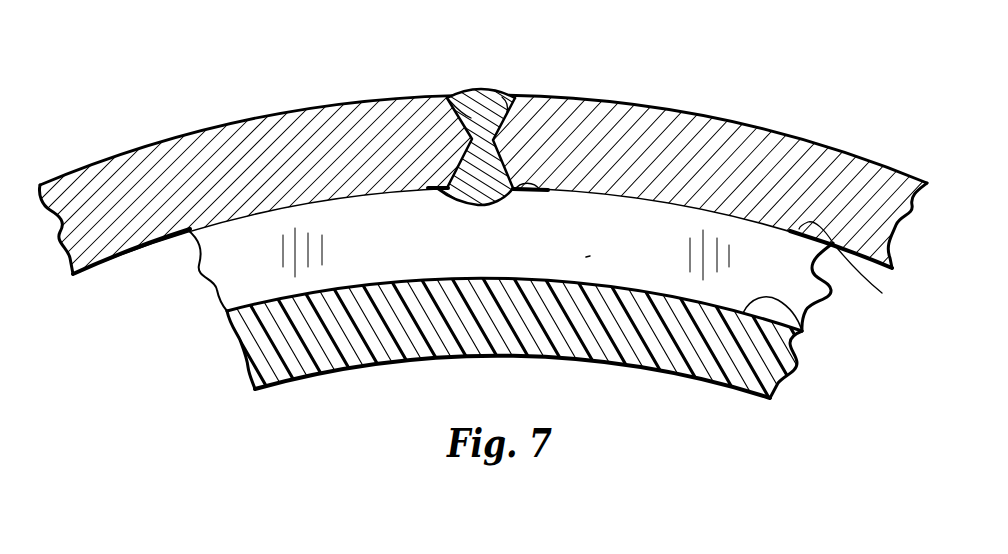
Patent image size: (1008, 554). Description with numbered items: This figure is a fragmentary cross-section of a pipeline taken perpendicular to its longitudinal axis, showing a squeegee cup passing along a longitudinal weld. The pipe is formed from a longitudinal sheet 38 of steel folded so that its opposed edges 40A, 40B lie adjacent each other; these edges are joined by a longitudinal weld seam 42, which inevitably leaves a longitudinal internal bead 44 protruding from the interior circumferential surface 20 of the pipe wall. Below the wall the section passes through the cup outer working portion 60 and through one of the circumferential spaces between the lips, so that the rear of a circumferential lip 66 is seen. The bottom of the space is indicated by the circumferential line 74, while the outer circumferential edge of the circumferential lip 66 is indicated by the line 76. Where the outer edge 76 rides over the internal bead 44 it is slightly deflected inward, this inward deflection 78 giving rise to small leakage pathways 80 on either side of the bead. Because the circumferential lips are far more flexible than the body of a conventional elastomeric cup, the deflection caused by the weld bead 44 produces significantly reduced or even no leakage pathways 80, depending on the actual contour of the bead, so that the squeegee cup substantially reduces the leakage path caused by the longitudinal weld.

The interior circumferential surface 20 is at (124, 255).
The longitudinal sheet 38 is at (201, 173).
The opposed edge 40A is at (463, 95).
The opposed edge 40B is at (503, 97).
The longitudinal weld seam 42 is at (484, 96).
The longitudinal internal bead 44 is at (484, 196).
The outer working portion 60 is at (648, 350).
The intermediate circumferential lip 66 is at (680, 237).
The circumferential line 74 is at (803, 318).
The outer circumferential edge 76 is at (852, 263).
The inward deflection 78 is at (518, 188).
The leakage pathway 80 is at (448, 195).